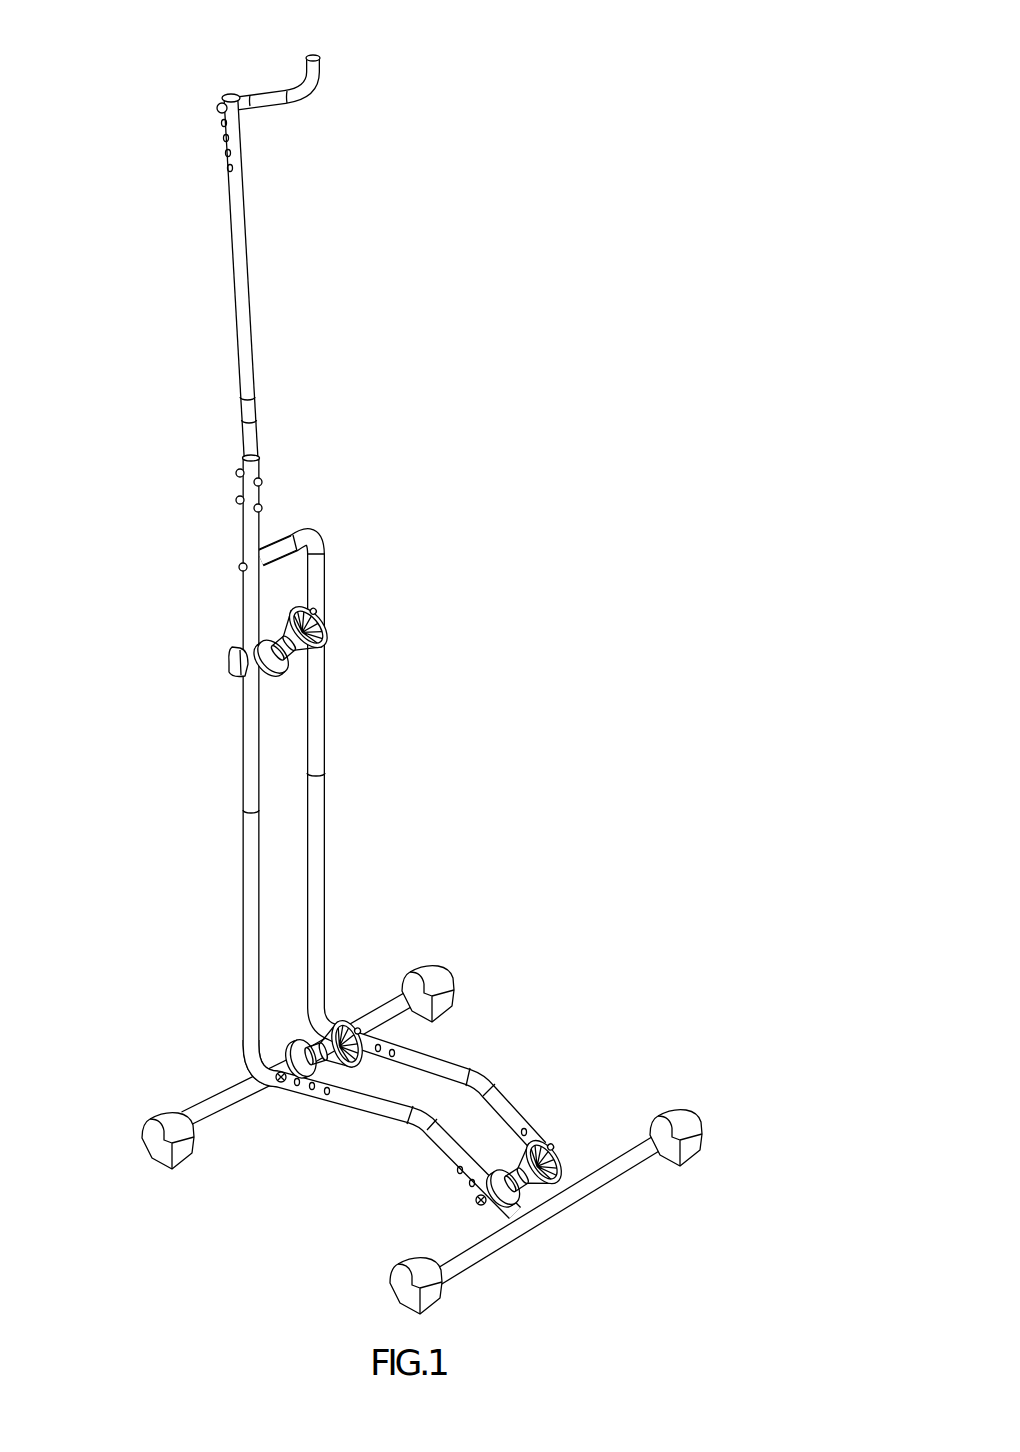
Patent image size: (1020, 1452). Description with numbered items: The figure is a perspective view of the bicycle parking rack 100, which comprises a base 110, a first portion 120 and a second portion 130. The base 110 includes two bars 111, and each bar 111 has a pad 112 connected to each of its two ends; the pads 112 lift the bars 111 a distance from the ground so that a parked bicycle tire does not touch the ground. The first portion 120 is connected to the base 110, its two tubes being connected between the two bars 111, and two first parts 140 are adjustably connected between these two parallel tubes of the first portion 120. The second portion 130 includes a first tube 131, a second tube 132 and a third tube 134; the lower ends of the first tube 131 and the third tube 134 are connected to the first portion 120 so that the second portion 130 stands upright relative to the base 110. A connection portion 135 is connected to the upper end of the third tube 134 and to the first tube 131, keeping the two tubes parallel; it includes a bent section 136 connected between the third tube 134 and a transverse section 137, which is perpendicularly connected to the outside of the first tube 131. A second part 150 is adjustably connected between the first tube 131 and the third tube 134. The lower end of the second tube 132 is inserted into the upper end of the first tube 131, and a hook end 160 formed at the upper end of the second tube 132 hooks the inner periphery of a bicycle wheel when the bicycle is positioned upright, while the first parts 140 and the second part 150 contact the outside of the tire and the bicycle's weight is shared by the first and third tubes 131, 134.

The bicycle parking rack 100 is at (438, 661).
The base 110 is at (445, 1101).
The bar 111 is at (593, 1172).
The pad 112 is at (446, 985).
The first portion 120 is at (498, 1062).
The second portion 130 is at (278, 539).
The first tube 131 is at (243, 742).
The second tube 132 is at (226, 266).
The third tube 134 is at (351, 739).
The connection portion 135 is at (364, 731).
The bent section 136 is at (317, 537).
The transverse section 137 is at (276, 543).
The first part 140 is at (350, 1030).
The second part 150 is at (320, 632).
The hook end 160 is at (317, 67).